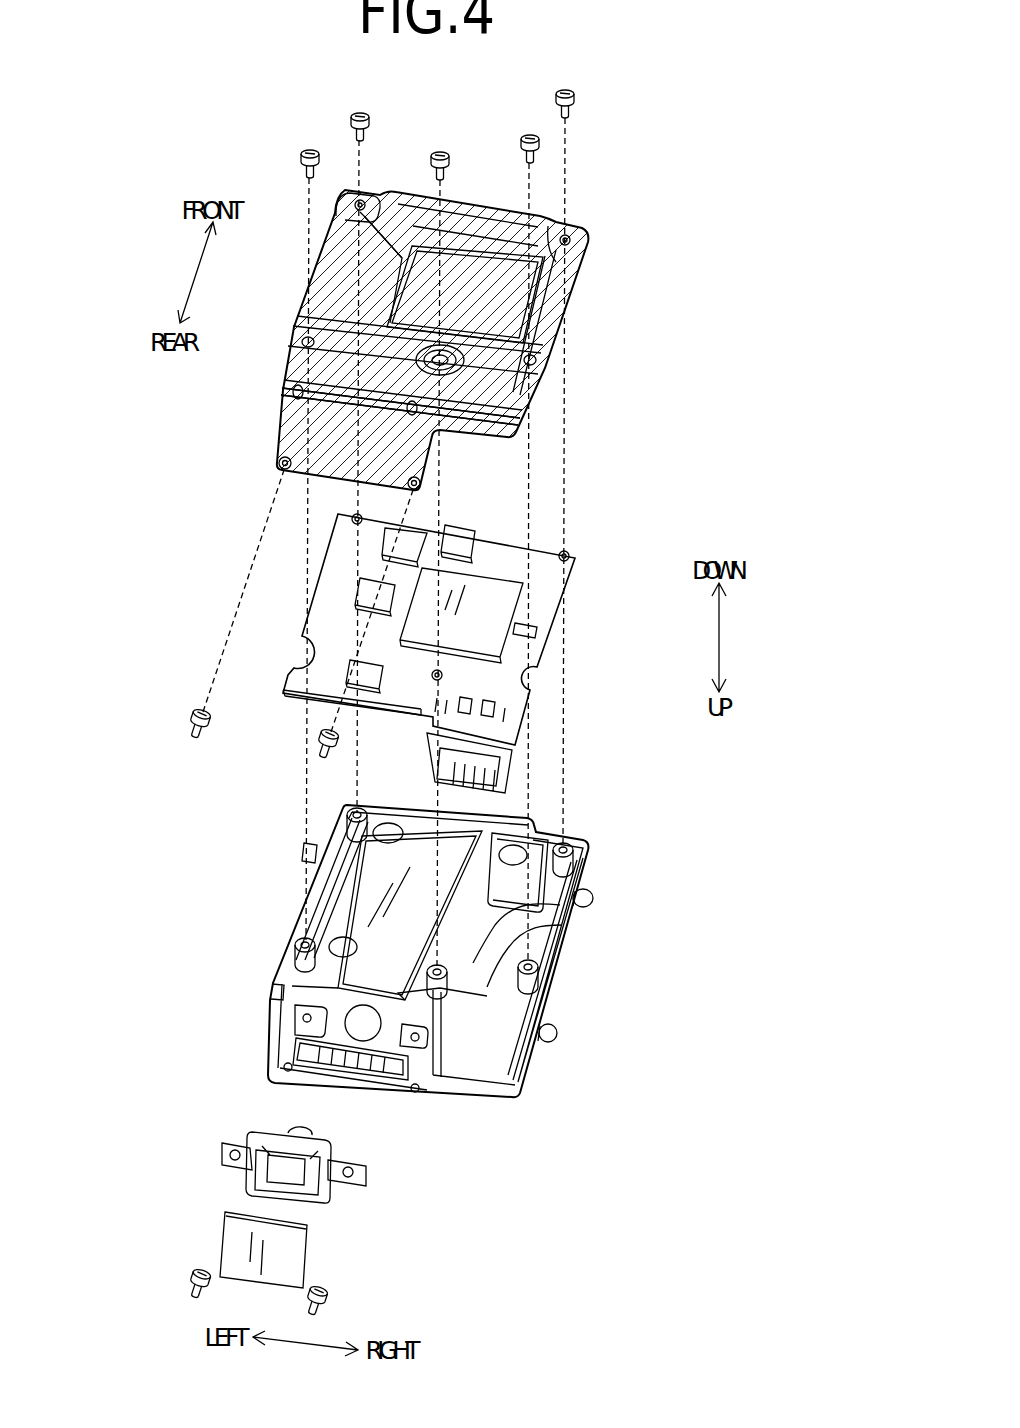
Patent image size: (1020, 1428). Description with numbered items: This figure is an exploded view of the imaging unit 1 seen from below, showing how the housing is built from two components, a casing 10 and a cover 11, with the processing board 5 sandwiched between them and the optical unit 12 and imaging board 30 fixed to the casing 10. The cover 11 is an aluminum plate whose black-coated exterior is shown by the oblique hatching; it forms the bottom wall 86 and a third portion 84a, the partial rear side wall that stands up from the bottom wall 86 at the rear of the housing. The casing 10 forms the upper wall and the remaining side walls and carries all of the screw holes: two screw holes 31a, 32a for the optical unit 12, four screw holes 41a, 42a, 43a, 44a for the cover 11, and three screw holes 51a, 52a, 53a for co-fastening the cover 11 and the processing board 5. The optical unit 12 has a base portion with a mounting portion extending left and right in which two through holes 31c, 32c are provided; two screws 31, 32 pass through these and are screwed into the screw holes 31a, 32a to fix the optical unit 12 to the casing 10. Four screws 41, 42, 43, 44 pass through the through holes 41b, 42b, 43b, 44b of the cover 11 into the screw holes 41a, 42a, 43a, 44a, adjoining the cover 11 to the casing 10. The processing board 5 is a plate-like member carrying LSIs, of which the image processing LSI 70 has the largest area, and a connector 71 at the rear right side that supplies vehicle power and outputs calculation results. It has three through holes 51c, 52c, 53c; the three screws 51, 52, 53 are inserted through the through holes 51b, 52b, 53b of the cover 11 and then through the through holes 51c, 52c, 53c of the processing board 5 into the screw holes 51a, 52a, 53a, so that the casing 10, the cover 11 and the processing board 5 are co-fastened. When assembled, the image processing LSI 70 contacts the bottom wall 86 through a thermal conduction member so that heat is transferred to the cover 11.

The imaging unit 1 is at (243, 133).
The processing board 5 is at (605, 652).
The casing 10 is at (609, 950).
The cover 11 is at (607, 338).
The optical unit 12 is at (391, 1205).
The imaging board 30 is at (340, 1270).
The screw 31 is at (190, 1275).
The screw 32 is at (330, 1297).
The screw hole 31a is at (303, 1022).
The screw hole 32a is at (420, 1042).
The through hole 31c is at (233, 1160).
The through hole 32c is at (348, 1180).
The screw 41 is at (192, 730).
The screw 42 is at (320, 748).
The screw 43 is at (311, 149).
The screw 44 is at (531, 134).
The screw 51 is at (440, 151).
The screw 52 is at (364, 113).
The screw 53 is at (575, 97).
The screw hole 41a is at (283, 1072).
The screw hole 42a is at (414, 1093).
The screw hole 43a is at (297, 945).
The screw hole 44a is at (540, 967).
The screw hole 51a is at (440, 982).
The screw hole 52a is at (347, 813).
The screw hole 53a is at (575, 840).
The through hole 41b is at (283, 463).
The through hole 42b is at (418, 484).
The through hole 43b is at (306, 342).
The through hole 44b is at (533, 360).
The through hole 51b is at (443, 365).
The through hole 52b is at (361, 202).
The through hole 53b is at (566, 238).
The through hole 51c is at (435, 678).
The through hole 52c is at (354, 518).
The through hole 53c is at (567, 553).
The image processing LSI 70 is at (478, 632).
The connector 71 is at (512, 768).
The third portion 84a is at (284, 430).
The bottom wall 86 is at (317, 264).